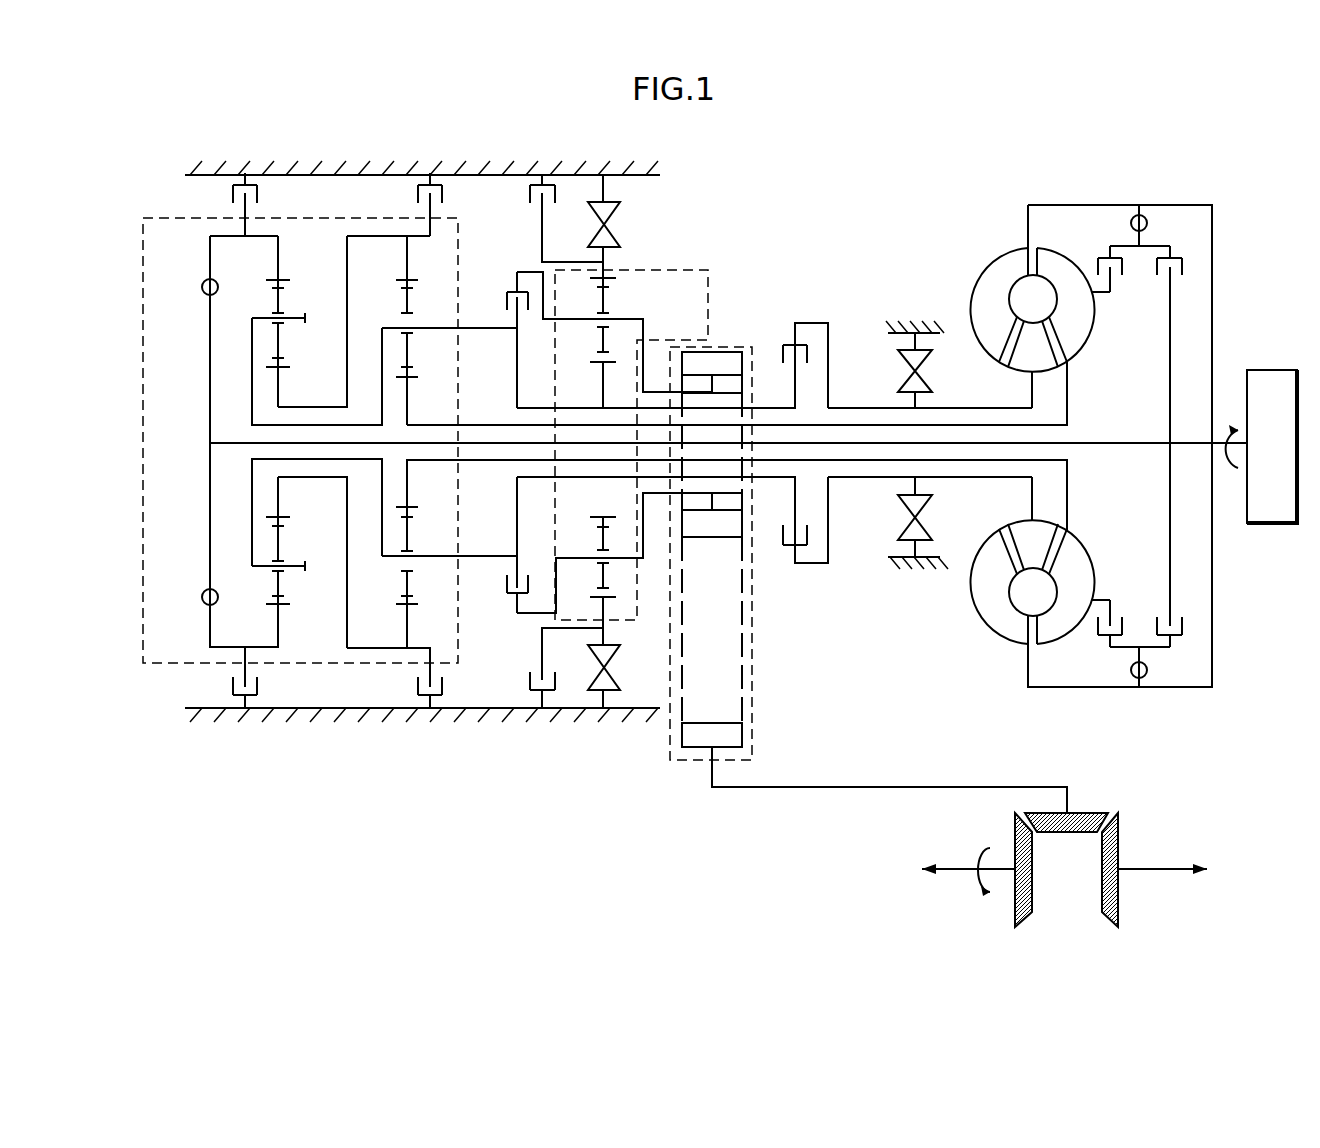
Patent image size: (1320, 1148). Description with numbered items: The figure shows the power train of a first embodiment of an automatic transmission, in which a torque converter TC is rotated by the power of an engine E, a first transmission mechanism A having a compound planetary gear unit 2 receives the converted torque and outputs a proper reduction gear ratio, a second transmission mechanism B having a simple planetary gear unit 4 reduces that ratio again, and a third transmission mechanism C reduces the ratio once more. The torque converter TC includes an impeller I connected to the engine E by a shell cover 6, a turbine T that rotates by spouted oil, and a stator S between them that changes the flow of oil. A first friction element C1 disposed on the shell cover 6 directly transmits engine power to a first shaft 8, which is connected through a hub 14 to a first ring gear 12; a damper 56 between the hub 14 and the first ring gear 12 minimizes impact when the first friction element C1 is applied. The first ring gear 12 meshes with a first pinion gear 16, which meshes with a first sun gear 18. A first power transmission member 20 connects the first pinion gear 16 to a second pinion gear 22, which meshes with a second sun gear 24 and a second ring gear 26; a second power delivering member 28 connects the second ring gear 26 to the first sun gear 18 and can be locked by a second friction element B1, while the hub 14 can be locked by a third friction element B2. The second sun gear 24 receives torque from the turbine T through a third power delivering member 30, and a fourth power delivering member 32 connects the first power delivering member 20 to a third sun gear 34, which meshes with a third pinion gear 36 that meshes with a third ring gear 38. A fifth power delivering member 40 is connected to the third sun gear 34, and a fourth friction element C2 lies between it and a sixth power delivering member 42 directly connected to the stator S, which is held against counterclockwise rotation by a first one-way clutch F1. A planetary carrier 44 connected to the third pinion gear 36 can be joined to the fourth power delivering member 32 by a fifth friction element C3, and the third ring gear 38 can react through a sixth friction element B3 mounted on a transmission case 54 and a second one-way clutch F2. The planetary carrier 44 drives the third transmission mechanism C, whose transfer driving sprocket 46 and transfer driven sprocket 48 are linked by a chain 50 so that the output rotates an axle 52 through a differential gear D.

The compound planetary gear unit 2 is at (165, 217).
The simple planetary gear unit 4 is at (712, 283).
The shell cover 6 is at (1118, 205).
The first shaft 8 is at (1126, 442).
The first ring gear 12 is at (275, 278).
The hub 14 is at (208, 363).
The first pinion gear 16 is at (284, 360).
The first sun gear 18 is at (284, 372).
The first power transmission member 20 is at (273, 425).
The second pinion gear 22 is at (411, 292).
The second sun gear 24 is at (410, 380).
The second ring gear 26 is at (405, 278).
The second power delivering member 28 is at (345, 262).
The third power delivering member 30 is at (1058, 430).
The fourth power delivering member 32 is at (487, 332).
The third sun gear 34 is at (606, 366).
The third pinion gear 36 is at (600, 350).
The third ring gear 38 is at (610, 283).
The fifth power delivering member 40 is at (770, 407).
The sixth power delivering member 42 is at (850, 407).
The planetary carrier 44 is at (645, 330).
The transfer driving sprocket 46 is at (735, 523).
The transfer driven sprocket 48 is at (745, 735).
The chain 50 is at (748, 657).
The axle 52 is at (1168, 868).
The transmission case 54 is at (440, 165).
The damper 56 is at (202, 290).
The first transmission mechanism A is at (329, 440).
The second transmission mechanism B is at (609, 441).
The third transmission mechanism C is at (840, 580).
The differential gear D is at (1000, 832).
The engine E is at (1261, 446).
The torque converter TC is at (1084, 415).
The impeller I is at (990, 285).
The turbine T is at (1085, 338).
The stator S is at (1030, 362).
The second friction element B1 is at (449, 440).
The third friction element B2 is at (264, 440).
The sixth friction element B3 is at (566, 441).
The first friction element C1 is at (1153, 446).
The fourth friction element C2 is at (782, 432).
The fifth friction element C3 is at (499, 439).
The first one-way clutch F1 is at (924, 445).
The second one-way clutch F2 is at (618, 441).